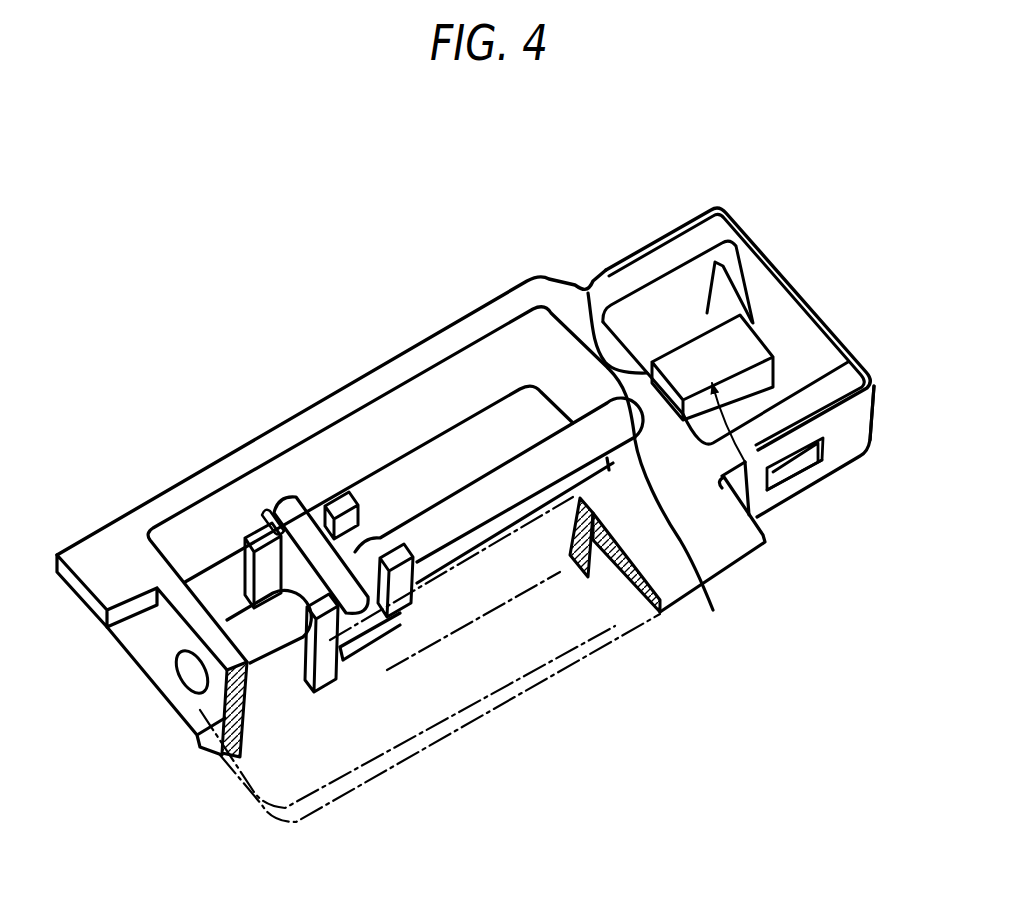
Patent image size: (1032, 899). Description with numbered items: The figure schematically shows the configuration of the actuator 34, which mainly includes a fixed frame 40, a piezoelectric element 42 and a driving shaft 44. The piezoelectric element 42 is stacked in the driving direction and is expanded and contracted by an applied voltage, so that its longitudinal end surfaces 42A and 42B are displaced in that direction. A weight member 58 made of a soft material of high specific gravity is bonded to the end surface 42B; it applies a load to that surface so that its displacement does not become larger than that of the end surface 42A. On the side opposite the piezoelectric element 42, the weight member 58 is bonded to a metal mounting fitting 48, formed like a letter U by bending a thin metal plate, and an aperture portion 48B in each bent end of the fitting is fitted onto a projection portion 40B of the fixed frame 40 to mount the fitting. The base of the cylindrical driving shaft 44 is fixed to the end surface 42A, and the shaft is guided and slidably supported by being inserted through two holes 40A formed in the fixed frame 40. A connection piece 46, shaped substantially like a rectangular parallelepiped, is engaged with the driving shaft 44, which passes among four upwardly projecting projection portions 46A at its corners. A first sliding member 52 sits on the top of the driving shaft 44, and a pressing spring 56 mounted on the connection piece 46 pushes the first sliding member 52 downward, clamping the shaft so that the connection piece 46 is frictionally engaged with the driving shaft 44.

The actuator 34 is at (490, 252).
The fixed frame 40 is at (458, 337).
The hole 40A is at (177, 660).
The projection portion 40B is at (803, 460).
The piezoelectric element 42 is at (745, 462).
The end surface 42A is at (580, 287).
The end surface 42B is at (707, 263).
The driving shaft 44 is at (487, 497).
The connection piece 46 is at (243, 577).
The projection portion 46A is at (253, 537).
The mounting fitting 48 is at (758, 237).
The aperture portion 48B is at (800, 493).
The first sliding member 52 is at (355, 552).
The pressing spring 56 is at (288, 513).
The weight member 58 is at (818, 355).